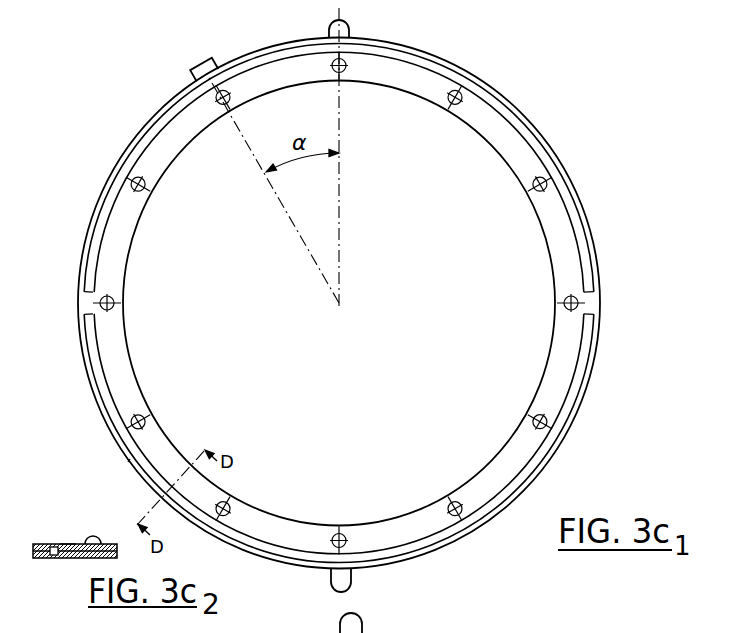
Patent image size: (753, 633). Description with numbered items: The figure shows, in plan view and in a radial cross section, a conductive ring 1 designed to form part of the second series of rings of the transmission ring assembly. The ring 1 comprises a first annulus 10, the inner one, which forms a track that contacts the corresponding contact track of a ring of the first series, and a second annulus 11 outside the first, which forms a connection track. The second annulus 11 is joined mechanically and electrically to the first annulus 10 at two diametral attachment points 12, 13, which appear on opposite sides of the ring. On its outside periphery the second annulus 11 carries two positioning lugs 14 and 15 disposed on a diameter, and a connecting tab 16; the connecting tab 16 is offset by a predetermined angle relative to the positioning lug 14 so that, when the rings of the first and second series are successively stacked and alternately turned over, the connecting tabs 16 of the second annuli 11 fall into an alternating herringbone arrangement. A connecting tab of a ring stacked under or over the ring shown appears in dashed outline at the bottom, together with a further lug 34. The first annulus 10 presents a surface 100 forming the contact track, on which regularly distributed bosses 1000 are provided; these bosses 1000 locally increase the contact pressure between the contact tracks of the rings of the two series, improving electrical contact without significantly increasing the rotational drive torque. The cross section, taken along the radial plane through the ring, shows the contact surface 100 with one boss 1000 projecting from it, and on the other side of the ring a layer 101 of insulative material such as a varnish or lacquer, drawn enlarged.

In FIG. 3c1, the conductive ring 1 is at (98, 408).
In FIG. 3c1, the first annulus 10 is at (160, 451).
In FIG. 3c1, the second annulus 11 is at (130, 459).
In FIG. 3c1, the diametral attachment point 12 is at (87, 302).
In FIG. 3c1, the diametral attachment point 13 is at (596, 304).
In FIG. 3c1, the positioning lug 14 is at (350, 25).
In FIG. 3c1, the positioning lug 15 is at (355, 583).
In FIG. 3c1, the connecting tab 16 is at (197, 76).
In FIG. 3c1, the lug 34 is at (366, 620).
In FIG. 3c1, the surface 100 is at (263, 520).
In FIG. 3c2, the surface 100 is at (76, 544).
In FIG. 3c1, the boss 1000 is at (152, 414).
In FIG. 3c2, the boss 1000 is at (93, 540).
In FIG. 3c2, the layer of insulative material 101 is at (80, 558).